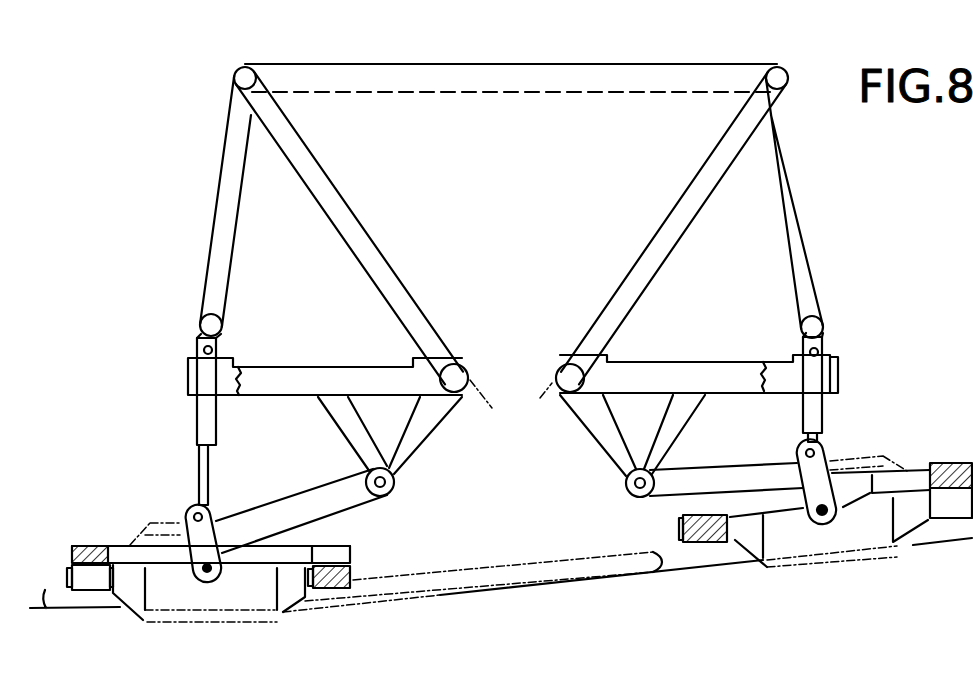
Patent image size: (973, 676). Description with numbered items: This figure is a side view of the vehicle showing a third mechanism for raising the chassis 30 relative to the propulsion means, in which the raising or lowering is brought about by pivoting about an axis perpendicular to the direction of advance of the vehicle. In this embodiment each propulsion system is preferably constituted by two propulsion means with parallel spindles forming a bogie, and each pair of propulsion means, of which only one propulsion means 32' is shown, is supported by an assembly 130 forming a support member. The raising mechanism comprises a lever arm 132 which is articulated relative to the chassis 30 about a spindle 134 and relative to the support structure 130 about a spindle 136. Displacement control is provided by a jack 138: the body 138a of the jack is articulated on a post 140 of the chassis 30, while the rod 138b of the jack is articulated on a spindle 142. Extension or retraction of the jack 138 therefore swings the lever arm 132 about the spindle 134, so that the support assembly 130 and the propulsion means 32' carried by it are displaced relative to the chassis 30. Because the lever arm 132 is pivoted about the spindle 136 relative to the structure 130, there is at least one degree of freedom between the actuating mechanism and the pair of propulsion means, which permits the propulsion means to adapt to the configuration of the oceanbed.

The chassis 30 is at (221, 194).
The post 140 is at (208, 252).
The jack 138 is at (165, 422).
The body of the jack 138a is at (208, 412).
The rod of the jack 138b is at (203, 470).
The spindle 142 is at (190, 513).
The lever arm 132 is at (300, 494).
The spindle 134 is at (395, 490).
The assembly forming a support member 130 is at (335, 555).
The spindle 136 is at (193, 556).
The propulsion means 32' is at (463, 596).